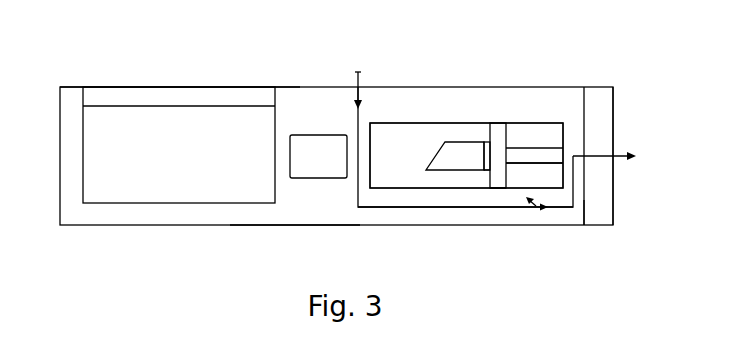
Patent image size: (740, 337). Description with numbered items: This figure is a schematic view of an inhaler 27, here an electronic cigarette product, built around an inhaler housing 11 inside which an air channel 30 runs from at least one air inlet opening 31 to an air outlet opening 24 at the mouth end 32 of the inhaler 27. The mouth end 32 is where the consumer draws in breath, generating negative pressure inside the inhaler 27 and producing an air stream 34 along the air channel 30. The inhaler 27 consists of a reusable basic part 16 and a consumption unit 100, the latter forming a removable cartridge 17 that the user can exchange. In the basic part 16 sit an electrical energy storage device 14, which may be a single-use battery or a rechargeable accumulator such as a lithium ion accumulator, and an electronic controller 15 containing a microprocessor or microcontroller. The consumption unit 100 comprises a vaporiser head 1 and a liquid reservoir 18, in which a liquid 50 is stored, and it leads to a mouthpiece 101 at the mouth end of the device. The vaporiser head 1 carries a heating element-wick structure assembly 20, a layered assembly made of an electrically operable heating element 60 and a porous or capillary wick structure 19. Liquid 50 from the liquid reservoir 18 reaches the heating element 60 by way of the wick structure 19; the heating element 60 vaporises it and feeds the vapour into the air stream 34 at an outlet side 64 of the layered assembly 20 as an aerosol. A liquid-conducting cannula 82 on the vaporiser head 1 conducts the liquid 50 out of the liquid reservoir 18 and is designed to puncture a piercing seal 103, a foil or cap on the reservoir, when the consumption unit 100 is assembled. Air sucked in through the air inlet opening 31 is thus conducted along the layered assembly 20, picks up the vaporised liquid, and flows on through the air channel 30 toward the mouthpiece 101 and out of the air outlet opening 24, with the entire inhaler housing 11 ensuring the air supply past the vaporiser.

The vaporiser head 1 is at (494, 178).
The inhaler housing 11 is at (78, 227).
The electrical energy storage device 14 is at (185, 161).
The electronic controller 15 is at (330, 164).
The reusable basic part 16 is at (271, 232).
The removable cartridge 17 is at (497, 112).
The liquid reservoir 18 is at (422, 122).
The wick structure 19 is at (487, 178).
The heating element-wick structure assembly 20 is at (540, 210).
The air outlet opening 24 is at (619, 160).
The inhaler 27 is at (203, 54).
The air channel 30 is at (385, 214).
The air inlet opening 31 is at (358, 72).
The mouth end 32 is at (616, 113).
The air stream 34 is at (420, 209).
The liquid 50 is at (416, 164).
The heating element 60 is at (549, 183).
The outlet side 64 is at (567, 148).
The liquid-conducting cannula 82 is at (465, 168).
The consumption unit 100 is at (336, 232).
The mouthpiece 101 is at (597, 98).
The piercing seal 103 is at (487, 141).